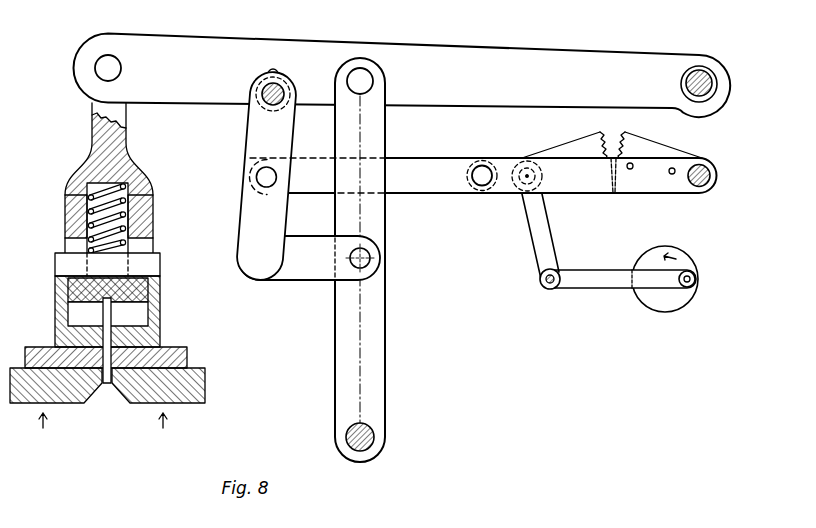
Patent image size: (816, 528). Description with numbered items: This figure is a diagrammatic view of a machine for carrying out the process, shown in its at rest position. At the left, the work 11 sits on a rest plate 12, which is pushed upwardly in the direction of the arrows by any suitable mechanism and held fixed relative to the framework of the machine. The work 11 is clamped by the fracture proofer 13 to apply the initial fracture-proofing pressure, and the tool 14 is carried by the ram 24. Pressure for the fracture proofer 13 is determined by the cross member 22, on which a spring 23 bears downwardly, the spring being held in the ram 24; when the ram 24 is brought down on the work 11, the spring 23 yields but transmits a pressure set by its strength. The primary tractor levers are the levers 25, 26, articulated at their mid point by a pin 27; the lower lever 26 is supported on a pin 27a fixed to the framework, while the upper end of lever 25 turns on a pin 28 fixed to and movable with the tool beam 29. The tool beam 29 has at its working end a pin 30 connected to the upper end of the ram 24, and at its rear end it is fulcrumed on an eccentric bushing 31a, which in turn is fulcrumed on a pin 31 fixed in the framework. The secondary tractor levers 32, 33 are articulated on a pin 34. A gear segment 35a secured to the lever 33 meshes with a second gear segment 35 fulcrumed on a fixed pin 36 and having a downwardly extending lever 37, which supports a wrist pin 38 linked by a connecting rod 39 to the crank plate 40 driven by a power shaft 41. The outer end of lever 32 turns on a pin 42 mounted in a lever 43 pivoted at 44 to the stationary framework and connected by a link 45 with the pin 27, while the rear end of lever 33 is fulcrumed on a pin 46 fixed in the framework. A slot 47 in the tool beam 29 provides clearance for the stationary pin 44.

The work 11 is at (185, 356).
The rest plate 12 is at (193, 384).
The fracture proofer 13 is at (150, 333).
The tool 14 is at (112, 312).
The cross member 22 is at (160, 265).
The spring 23 is at (152, 213).
The ram 24 is at (127, 145).
The upper lever 25 is at (387, 137).
The lower lever 26 is at (383, 336).
The pin 27 is at (371, 259).
The pin 27a is at (374, 435).
The pin 28 is at (362, 69).
The tool beam 29 is at (428, 52).
The pin 30 is at (108, 56).
The pin 31 is at (702, 71).
The eccentric bushing 31a is at (712, 92).
The secondary tractor lever 32 is at (419, 188).
The secondary tractor lever 33 is at (504, 194).
The pin 34 is at (483, 166).
The gear segment 35 is at (567, 152).
The gear segment 35a is at (638, 145).
The fixed pin 36 is at (522, 193).
The lever 37 is at (540, 238).
The wrist pin 38 is at (545, 289).
The connecting rod 39 is at (597, 289).
The crank plate 40 is at (655, 307).
The power shaft 41 is at (695, 274).
The pin 42 is at (256, 181).
The lever 43 is at (252, 143).
The pivot 44 is at (262, 103).
The link 45 is at (306, 277).
The pin 46 is at (711, 170).
The slot 47 is at (276, 76).